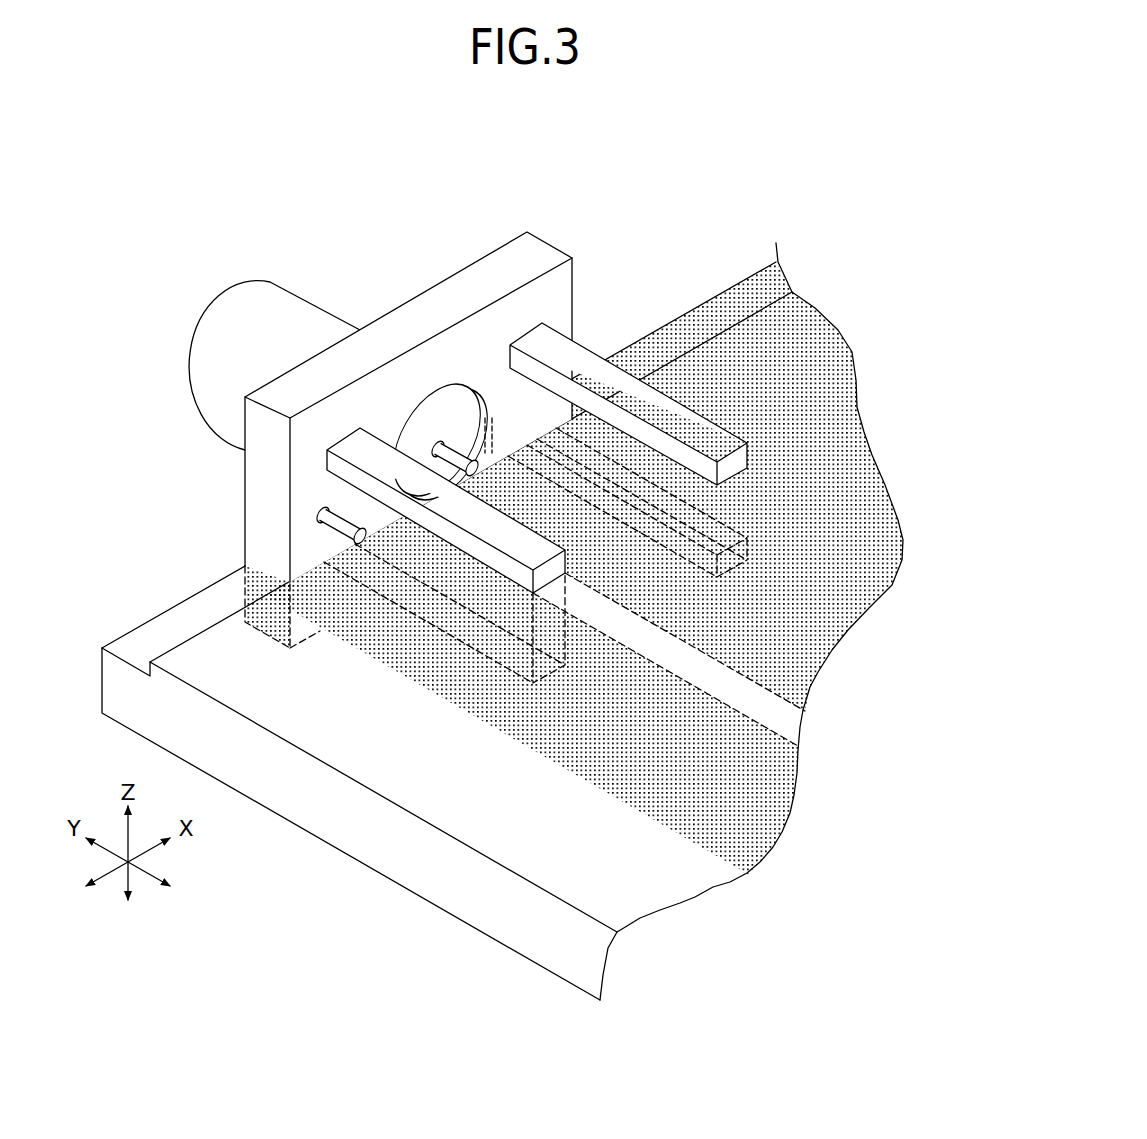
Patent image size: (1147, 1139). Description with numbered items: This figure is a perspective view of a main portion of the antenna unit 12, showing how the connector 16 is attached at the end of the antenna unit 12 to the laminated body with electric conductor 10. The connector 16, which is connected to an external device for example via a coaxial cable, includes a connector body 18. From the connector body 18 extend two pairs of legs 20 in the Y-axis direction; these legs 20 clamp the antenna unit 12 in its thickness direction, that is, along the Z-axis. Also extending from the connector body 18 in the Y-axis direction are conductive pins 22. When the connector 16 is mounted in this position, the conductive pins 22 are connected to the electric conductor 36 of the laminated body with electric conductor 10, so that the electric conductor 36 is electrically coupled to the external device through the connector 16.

The laminated body with electric conductor 10 is at (162, 586).
The antenna unit 12 is at (820, 288).
The connector 16 is at (478, 237).
The connector body 18 is at (404, 324).
The legs 20 is at (407, 566).
The conductive pins 22 is at (408, 495).
The electric conductor 36 is at (865, 562).